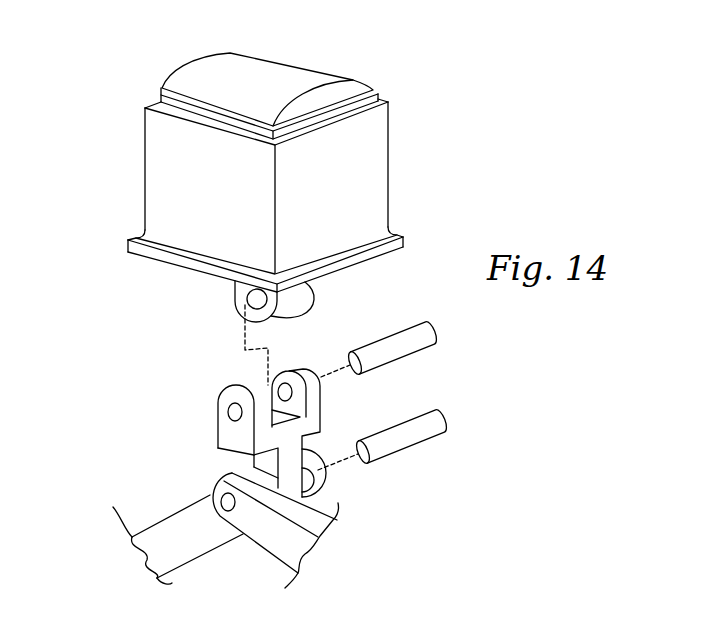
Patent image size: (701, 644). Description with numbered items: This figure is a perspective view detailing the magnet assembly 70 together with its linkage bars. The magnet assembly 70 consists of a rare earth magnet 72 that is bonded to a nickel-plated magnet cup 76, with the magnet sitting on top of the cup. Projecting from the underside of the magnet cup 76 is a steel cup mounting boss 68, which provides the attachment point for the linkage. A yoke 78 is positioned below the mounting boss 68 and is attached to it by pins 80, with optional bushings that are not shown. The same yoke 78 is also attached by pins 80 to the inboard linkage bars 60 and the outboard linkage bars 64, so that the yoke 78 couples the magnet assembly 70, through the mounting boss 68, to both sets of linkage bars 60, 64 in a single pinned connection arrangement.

The inboard linkage bars 60 is at (182, 528).
The outboard linkage bars 64 is at (273, 538).
The steel cup mounting boss 68 is at (308, 297).
The magnet assembly 70 is at (138, 211).
The rare earth magnet 72 is at (188, 75).
The nickel-plated magnet cup 76 is at (157, 153).
The yoke 78 is at (229, 435).
The pins 80 is at (424, 341).